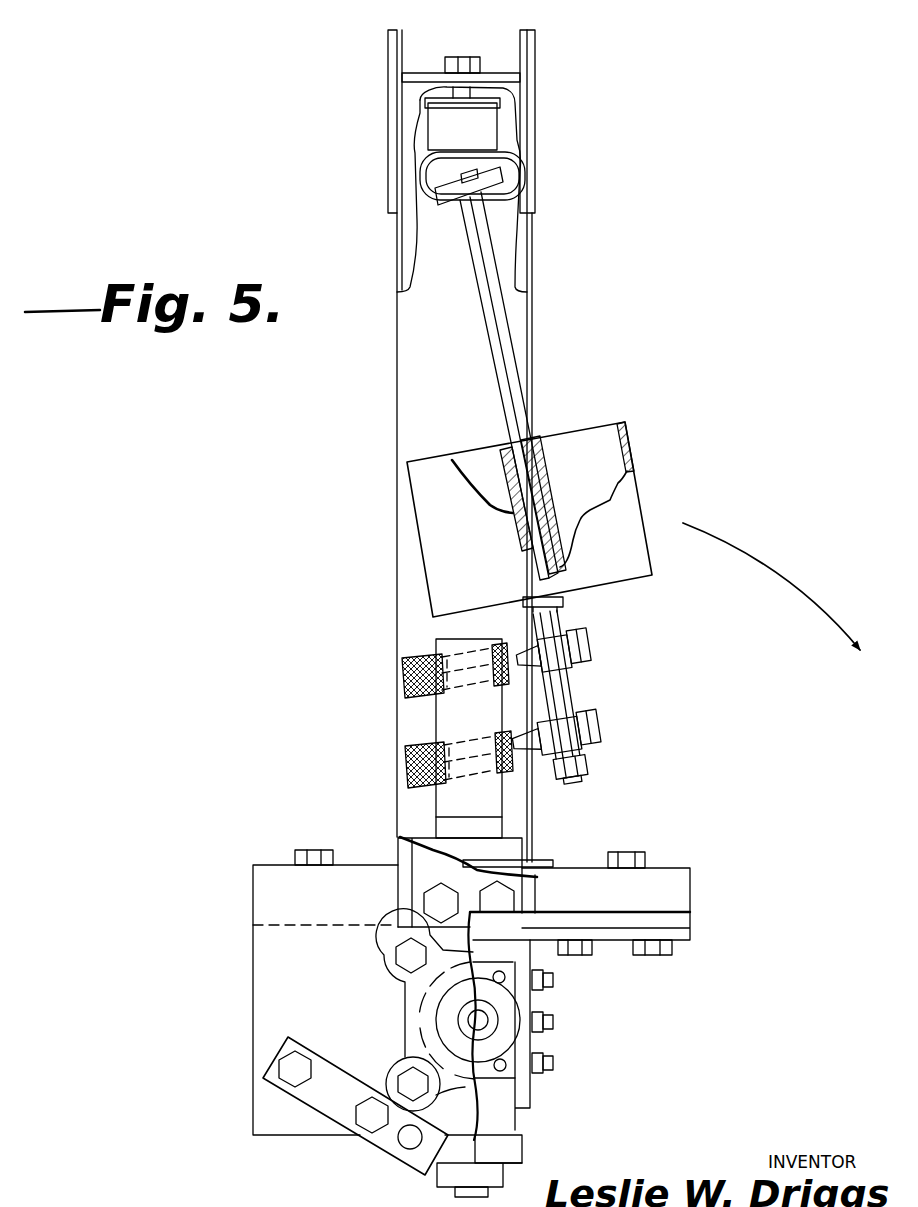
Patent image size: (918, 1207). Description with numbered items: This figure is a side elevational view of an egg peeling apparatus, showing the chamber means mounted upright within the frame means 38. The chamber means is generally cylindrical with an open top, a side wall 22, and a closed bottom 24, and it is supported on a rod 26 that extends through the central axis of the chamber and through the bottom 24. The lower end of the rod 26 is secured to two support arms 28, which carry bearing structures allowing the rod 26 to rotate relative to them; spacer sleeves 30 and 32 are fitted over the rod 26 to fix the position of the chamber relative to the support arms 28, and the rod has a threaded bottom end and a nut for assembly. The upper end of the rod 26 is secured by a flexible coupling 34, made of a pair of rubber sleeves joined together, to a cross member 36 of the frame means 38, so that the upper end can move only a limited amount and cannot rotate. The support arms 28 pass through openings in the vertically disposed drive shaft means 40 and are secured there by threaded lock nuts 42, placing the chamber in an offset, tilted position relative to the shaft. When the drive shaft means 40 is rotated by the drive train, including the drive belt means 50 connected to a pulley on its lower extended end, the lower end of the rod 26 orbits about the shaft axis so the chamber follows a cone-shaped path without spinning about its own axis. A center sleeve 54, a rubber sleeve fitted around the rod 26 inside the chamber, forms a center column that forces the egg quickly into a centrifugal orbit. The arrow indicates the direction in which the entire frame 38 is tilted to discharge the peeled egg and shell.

The side wall 22 is at (633, 467).
The closed bottom 24 is at (640, 582).
The rod 26 is at (512, 360).
The support arms 28 is at (583, 650).
The spacer sleeve 30 is at (563, 622).
The spacer sleeve 32 is at (577, 695).
The flexible coupling 34 is at (510, 153).
The cross member 36 is at (503, 70).
The frame means 38 is at (394, 358).
The drive shaft means 40 is at (497, 800).
The threaded lock nuts 42 is at (405, 768).
The drive belt means 50 is at (508, 1143).
The center sleeve 54 is at (540, 473).